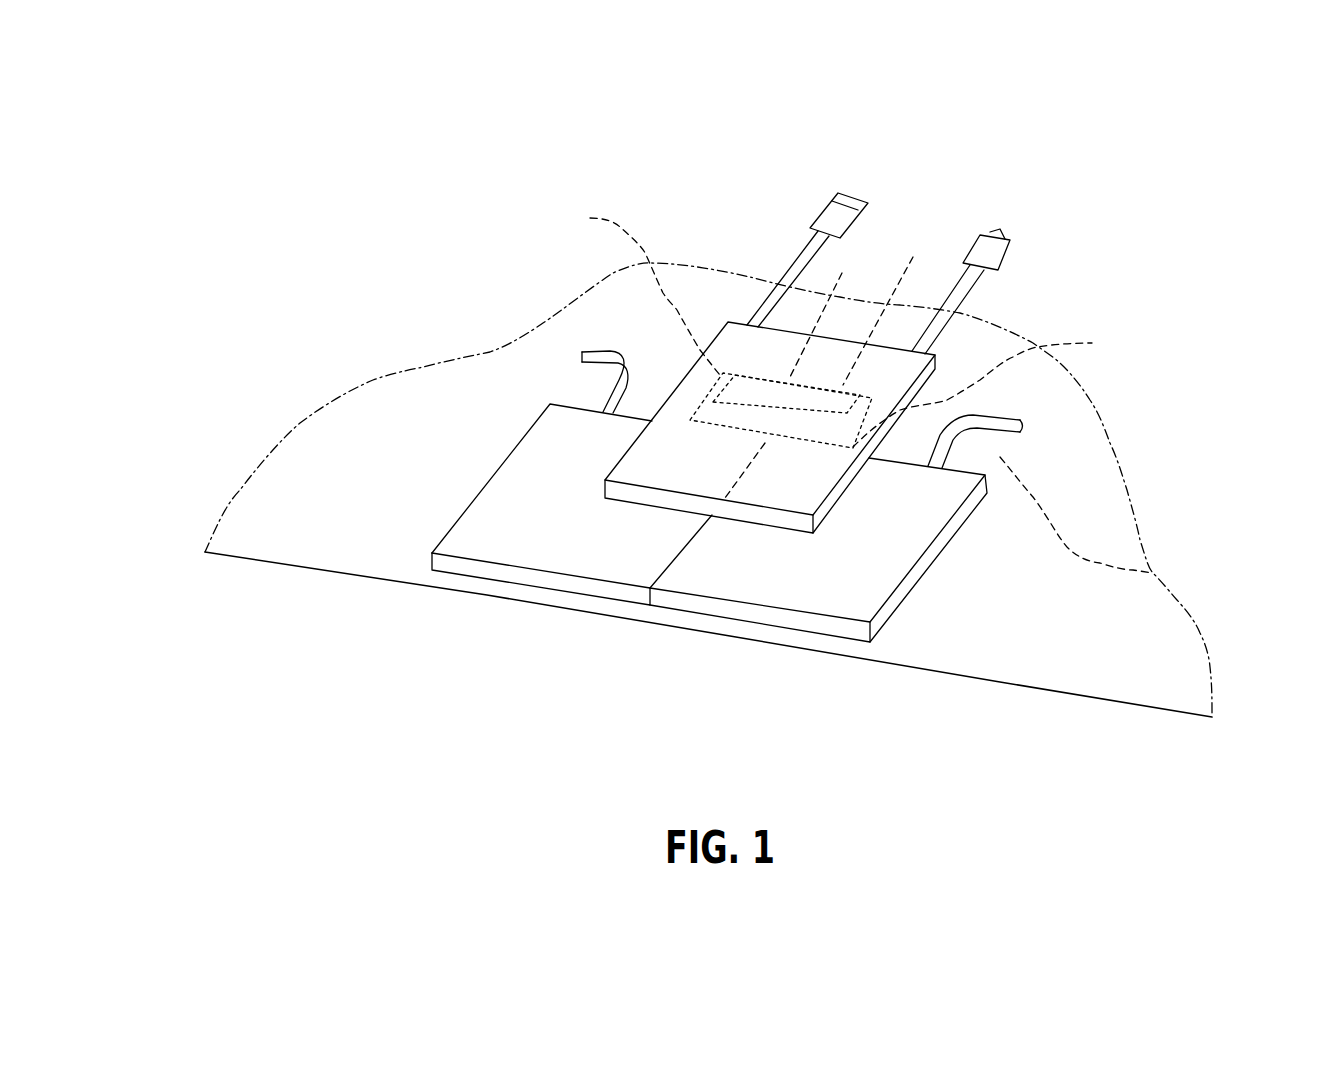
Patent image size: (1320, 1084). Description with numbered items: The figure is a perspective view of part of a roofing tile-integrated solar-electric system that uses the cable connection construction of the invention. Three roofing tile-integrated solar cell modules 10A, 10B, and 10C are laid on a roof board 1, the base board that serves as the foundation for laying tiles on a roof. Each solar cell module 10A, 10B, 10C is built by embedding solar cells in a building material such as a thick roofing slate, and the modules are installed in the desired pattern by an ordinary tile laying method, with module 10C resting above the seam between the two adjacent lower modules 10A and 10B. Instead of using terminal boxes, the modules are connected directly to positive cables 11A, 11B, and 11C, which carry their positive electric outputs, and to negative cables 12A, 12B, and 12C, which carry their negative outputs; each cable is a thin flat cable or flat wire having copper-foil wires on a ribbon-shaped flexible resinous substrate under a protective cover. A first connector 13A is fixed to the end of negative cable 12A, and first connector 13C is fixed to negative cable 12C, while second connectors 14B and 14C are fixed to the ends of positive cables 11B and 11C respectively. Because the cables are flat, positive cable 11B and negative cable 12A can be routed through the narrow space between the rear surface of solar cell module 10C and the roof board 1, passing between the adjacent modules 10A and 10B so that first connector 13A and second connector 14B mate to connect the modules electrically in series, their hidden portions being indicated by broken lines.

The roof board 1 is at (1105, 495).
The solar cell module 10A is at (570, 548).
The solar cell module 10B is at (790, 583).
The solar cell module 10C is at (810, 478).
The positive cable 11A is at (603, 403).
The positive cable 11B is at (1003, 385).
The positive cable 11C is at (800, 258).
The negative cable 12A is at (651, 351).
The negative cable 12B is at (1158, 577).
The negative cable 12C is at (967, 287).
The first connector 13A is at (829, 311).
The first connector 13C is at (978, 240).
The second connector 14B is at (890, 305).
The second connector 14C is at (848, 192).